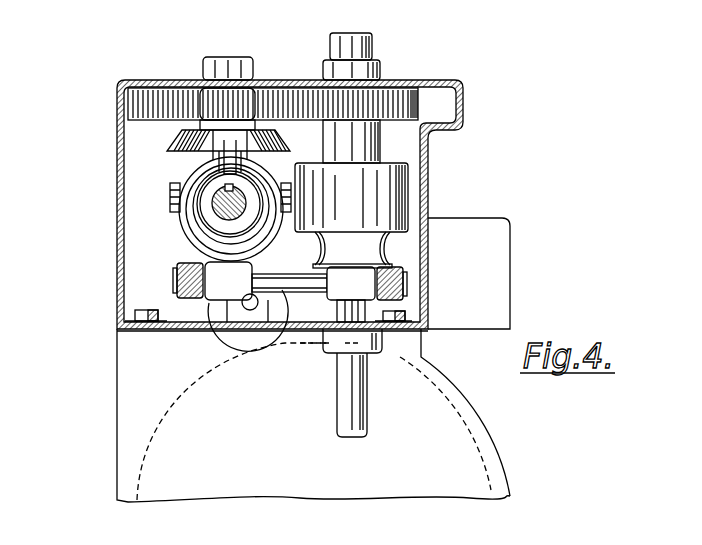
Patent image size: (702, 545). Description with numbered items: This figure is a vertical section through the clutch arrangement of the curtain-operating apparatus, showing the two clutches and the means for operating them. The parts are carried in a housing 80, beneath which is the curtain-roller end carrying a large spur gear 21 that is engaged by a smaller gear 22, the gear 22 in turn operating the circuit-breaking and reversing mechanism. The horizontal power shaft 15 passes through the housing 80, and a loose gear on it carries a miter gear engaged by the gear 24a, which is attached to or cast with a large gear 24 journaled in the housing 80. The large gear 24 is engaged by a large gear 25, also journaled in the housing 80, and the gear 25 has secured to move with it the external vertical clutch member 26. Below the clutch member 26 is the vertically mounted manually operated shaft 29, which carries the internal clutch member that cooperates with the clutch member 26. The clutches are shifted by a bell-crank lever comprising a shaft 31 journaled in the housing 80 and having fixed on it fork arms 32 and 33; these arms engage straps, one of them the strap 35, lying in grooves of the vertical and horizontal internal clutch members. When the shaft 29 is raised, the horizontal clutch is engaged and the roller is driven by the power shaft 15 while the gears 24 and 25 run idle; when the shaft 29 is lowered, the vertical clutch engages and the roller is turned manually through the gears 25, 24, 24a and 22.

The large gear 24 is at (153, 108).
The large gear 25 is at (417, 92).
The gear 24a is at (170, 142).
The strap 35 is at (178, 175).
The power shaft 15 is at (218, 207).
The housing 80 is at (117, 289).
The fork arm 33 is at (187, 245).
The gear 22 is at (210, 345).
The large spur gear 21 is at (130, 452).
The shaft 31 is at (285, 296).
The fork arm 32 is at (318, 302).
The external vertical clutch member 26 is at (360, 204).
The manually operated shaft 29 is at (363, 409).